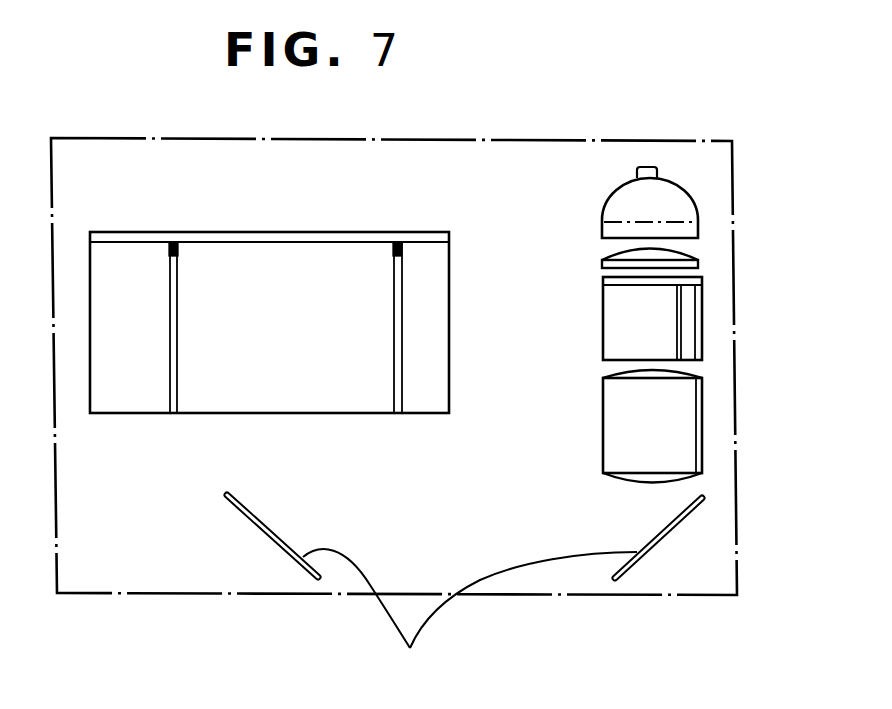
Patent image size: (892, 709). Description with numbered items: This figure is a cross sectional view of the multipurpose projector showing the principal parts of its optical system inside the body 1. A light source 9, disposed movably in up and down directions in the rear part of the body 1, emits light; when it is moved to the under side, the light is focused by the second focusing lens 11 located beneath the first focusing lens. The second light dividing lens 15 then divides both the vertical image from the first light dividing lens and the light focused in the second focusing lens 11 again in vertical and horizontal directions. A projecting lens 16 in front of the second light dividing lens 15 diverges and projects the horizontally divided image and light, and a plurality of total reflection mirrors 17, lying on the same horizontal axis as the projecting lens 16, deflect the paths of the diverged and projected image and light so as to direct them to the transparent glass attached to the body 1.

The body 1 is at (737, 543).
The light source 9 is at (677, 206).
The second focusing lens 11 is at (698, 262).
The second light dividing lens 15 is at (690, 322).
The projecting lens 16 is at (690, 437).
The total reflection mirrors 17 is at (377, 393).